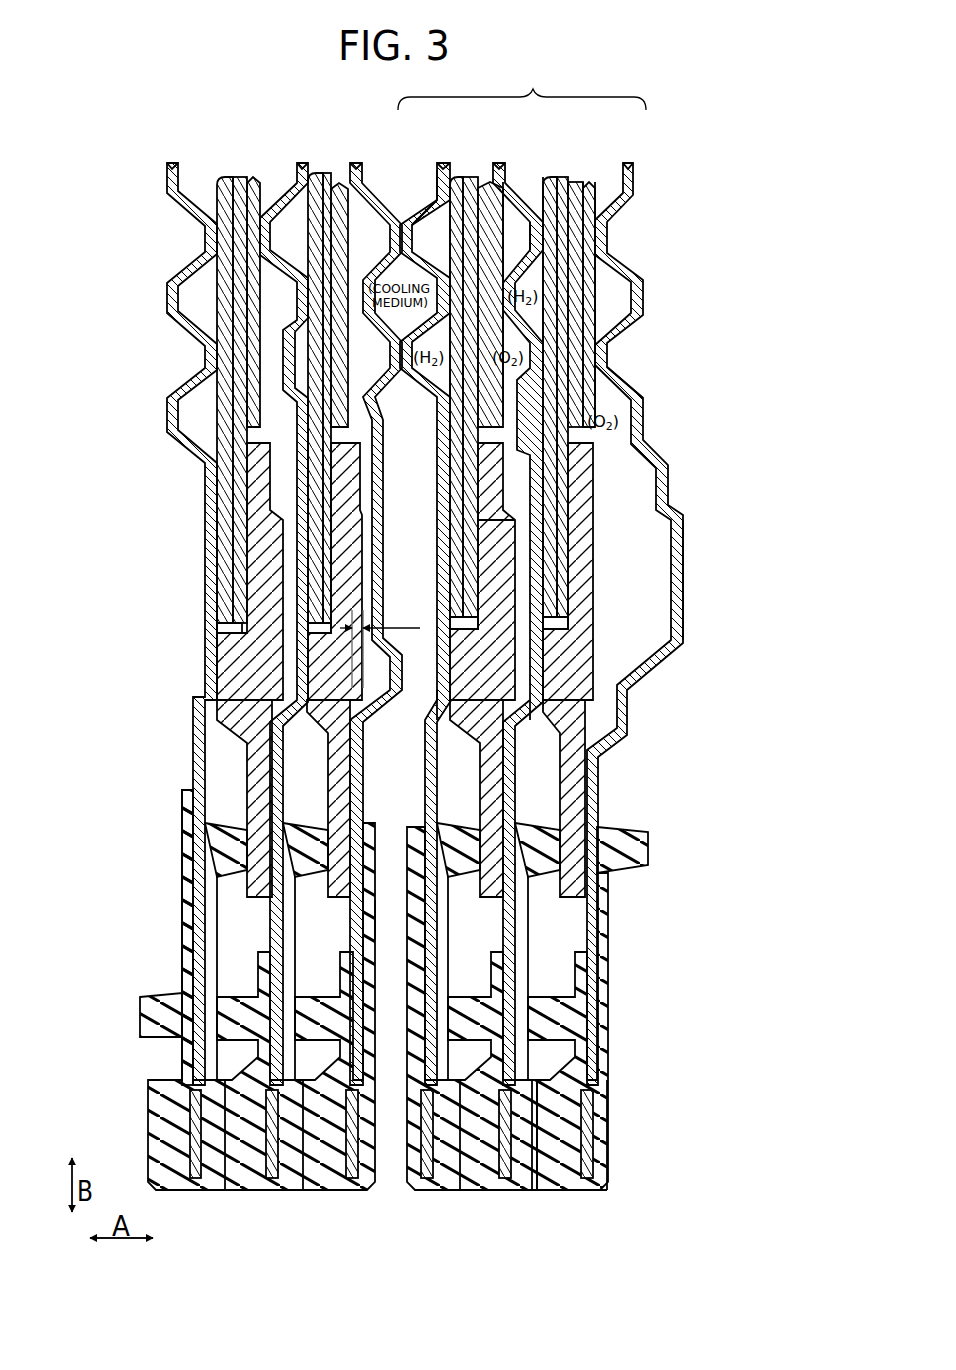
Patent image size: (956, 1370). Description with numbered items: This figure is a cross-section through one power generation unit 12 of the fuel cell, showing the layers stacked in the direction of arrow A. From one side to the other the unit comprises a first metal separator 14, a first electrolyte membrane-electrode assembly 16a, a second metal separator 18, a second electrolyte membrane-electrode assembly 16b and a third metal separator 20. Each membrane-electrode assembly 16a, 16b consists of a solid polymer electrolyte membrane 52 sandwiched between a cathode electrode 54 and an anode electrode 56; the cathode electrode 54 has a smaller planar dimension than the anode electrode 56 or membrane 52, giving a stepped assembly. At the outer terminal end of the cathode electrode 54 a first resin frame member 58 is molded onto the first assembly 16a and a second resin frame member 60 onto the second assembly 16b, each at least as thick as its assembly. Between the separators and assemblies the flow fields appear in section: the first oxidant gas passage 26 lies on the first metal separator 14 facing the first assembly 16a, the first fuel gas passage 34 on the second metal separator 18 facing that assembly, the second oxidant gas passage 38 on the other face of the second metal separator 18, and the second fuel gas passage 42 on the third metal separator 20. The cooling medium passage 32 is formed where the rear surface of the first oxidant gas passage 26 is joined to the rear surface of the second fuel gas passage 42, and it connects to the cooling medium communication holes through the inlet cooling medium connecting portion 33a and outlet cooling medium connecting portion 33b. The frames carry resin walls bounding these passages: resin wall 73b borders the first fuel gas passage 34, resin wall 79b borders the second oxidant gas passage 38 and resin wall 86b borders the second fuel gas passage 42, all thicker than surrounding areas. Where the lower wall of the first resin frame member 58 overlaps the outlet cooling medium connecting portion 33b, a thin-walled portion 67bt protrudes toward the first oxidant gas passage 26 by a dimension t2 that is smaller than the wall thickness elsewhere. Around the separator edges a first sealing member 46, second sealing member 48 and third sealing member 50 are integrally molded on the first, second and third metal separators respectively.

The power generation unit 12 is at (522, 85).
The first metal separator 14 is at (627, 165).
The first electrolyte membrane-electrode assembly 16a is at (562, 172).
The second electrolyte membrane-electrode assembly 16b is at (469, 172).
The second metal separator 18 is at (514, 180).
The third metal separator 20 is at (434, 165).
The first oxidant gas passage 26 is at (598, 398).
The cooling medium passage 32 is at (430, 258).
The first fuel gas passage 34 is at (535, 277).
The second oxidant gas passage 38 is at (500, 380).
The second fuel gas passage 42 is at (545, 330).
The first sealing member 46 is at (563, 1182).
The second sealing member 48 is at (480, 1182).
The third sealing member 50 is at (423, 1182).
The solid polymer electrolyte membrane 52 is at (562, 350).
The cathode electrode 54 is at (578, 315).
The anode electrode 56 is at (547, 368).
The first resin frame member 58 is at (597, 542).
The second resin frame member 60 is at (500, 483).
The thin-walled portion 67bt is at (353, 496).
The resin wall 73b is at (548, 710).
The resin wall 79b is at (510, 572).
The resin wall 86b is at (440, 700).
The inlet cooling medium connecting portion 33a is at (417, 565).
The outlet cooling medium connecting portion 33b is at (393, 920).
The dimension of the thin-walled portions t2 is at (380, 641).